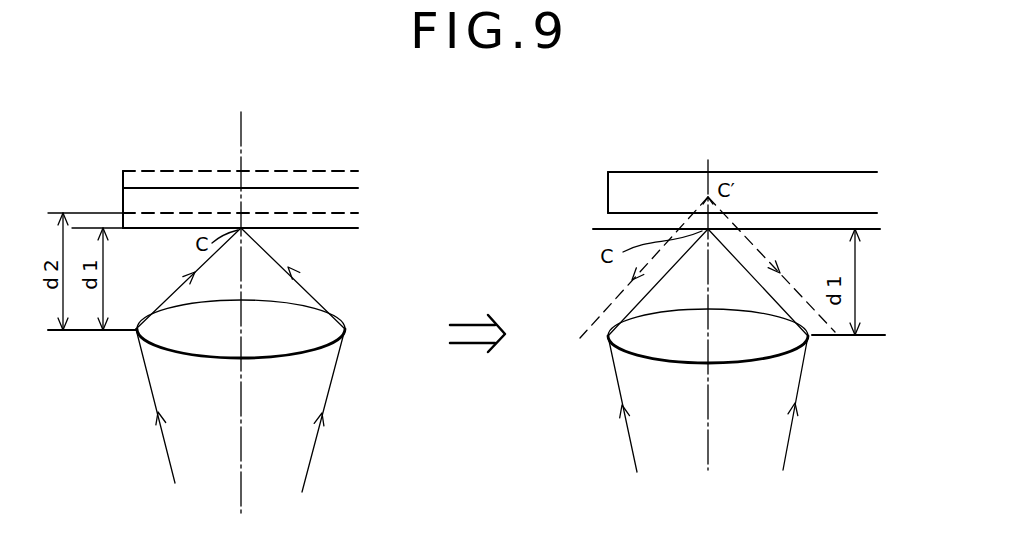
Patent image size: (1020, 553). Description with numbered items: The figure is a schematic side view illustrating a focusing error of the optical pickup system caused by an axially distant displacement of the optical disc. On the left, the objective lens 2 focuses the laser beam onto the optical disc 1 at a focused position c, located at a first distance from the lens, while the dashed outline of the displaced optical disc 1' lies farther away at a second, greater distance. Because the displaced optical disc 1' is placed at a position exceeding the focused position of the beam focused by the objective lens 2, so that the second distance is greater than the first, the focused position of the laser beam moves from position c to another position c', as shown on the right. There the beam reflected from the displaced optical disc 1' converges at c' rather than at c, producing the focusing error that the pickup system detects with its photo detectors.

The optical disc 1 is at (240, 178).
The displaced optical disc 1' is at (500, 164).
The objective lens 2 is at (346, 327).